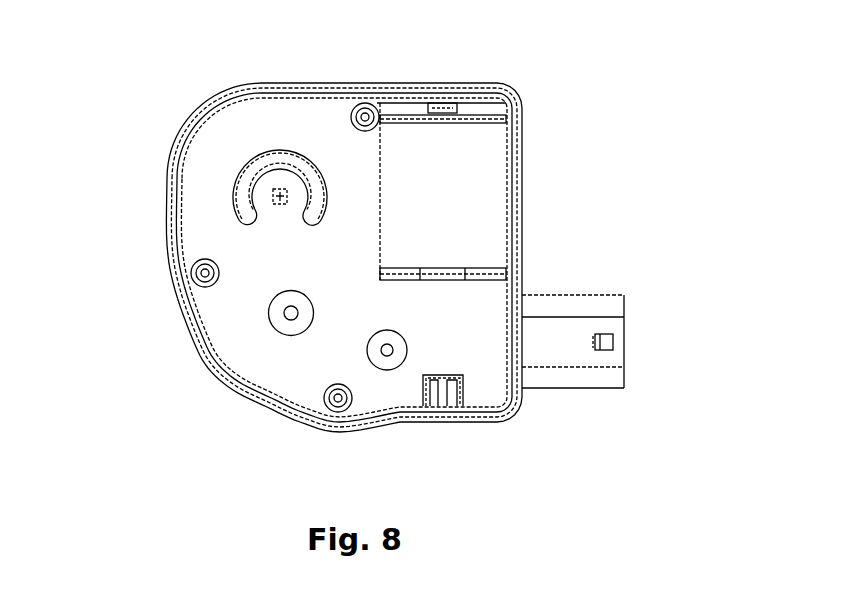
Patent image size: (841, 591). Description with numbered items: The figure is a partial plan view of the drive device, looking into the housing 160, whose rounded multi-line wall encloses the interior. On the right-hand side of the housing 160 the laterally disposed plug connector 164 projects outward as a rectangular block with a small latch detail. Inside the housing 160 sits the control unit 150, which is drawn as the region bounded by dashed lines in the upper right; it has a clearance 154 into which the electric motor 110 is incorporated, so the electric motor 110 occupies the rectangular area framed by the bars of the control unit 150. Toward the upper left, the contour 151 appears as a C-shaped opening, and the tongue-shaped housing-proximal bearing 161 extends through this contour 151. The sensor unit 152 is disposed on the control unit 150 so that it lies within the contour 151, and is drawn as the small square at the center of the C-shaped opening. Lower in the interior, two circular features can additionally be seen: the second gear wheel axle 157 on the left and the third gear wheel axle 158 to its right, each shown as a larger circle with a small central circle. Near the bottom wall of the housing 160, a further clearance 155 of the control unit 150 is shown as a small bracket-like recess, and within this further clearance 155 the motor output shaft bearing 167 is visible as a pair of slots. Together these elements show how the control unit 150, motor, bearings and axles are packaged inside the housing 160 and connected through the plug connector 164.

The electric motor 110 is at (470, 155).
The control unit 150 is at (230, 162).
The contour 151 is at (240, 187).
The sensor unit 152 is at (282, 207).
The clearance 154 is at (407, 273).
The further clearance 155 is at (463, 387).
The second gear wheel axle 157 is at (291, 320).
The third gear wheel axle 158 is at (387, 356).
The housing 160 is at (302, 90).
The housing-proximal bearing 161 is at (303, 162).
The plug connector 164 is at (580, 312).
The motor output shaft bearing 167 is at (443, 397).